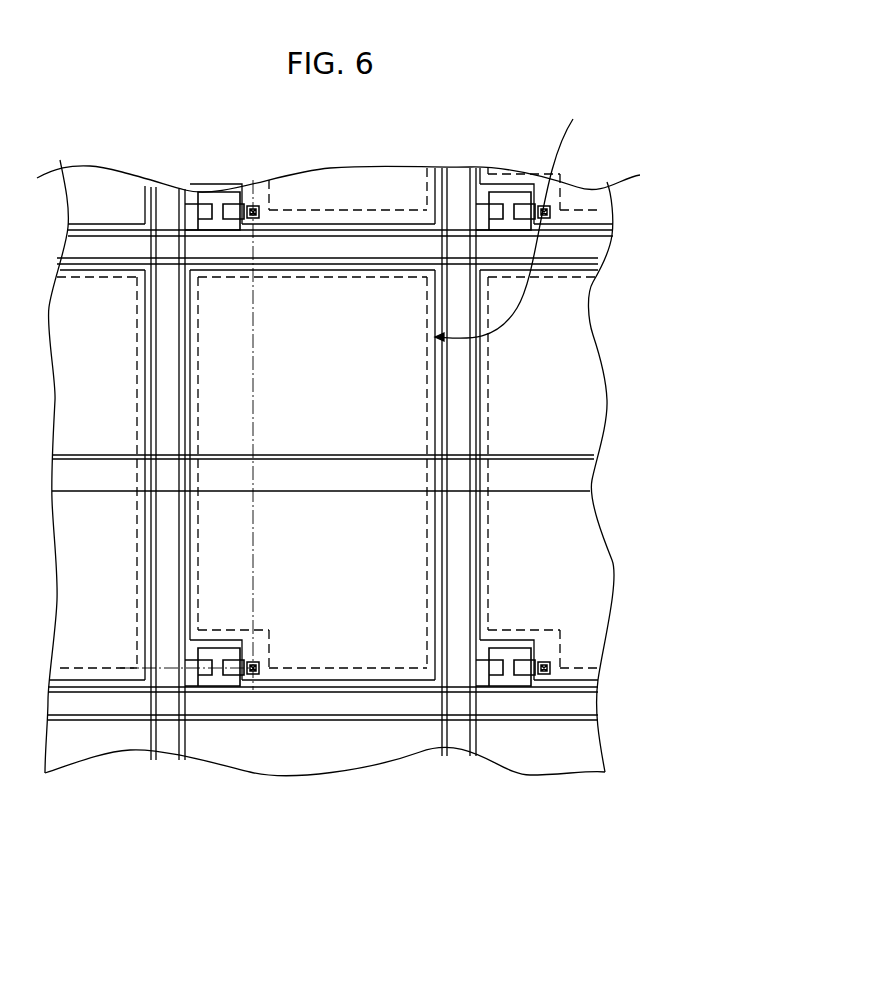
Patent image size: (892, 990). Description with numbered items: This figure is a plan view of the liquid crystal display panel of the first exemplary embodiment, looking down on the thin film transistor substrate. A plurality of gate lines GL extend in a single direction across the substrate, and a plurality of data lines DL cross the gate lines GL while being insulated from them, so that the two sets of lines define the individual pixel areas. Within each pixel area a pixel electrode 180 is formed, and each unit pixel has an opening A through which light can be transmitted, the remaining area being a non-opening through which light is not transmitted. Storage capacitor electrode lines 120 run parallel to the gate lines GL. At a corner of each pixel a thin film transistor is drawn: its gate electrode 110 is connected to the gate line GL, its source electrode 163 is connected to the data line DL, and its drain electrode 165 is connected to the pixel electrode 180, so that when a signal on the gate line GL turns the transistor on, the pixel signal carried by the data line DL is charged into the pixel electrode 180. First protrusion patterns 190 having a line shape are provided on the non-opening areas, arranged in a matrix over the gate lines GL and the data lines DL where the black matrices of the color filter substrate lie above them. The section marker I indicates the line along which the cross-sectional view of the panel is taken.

The gate line GL is at (72, 231).
The data line DL is at (187, 190).
The opening A is at (512, 220).
The section line I- I is at (120, 665).
The gate electrode 110 is at (213, 675).
The storage capacitor electrode line 120 is at (590, 477).
The source electrode 163 is at (205, 673).
The drain electrode 165 is at (244, 688).
The pixel electrode 180 is at (431, 698).
The first protrusion pattern 190 is at (165, 676).